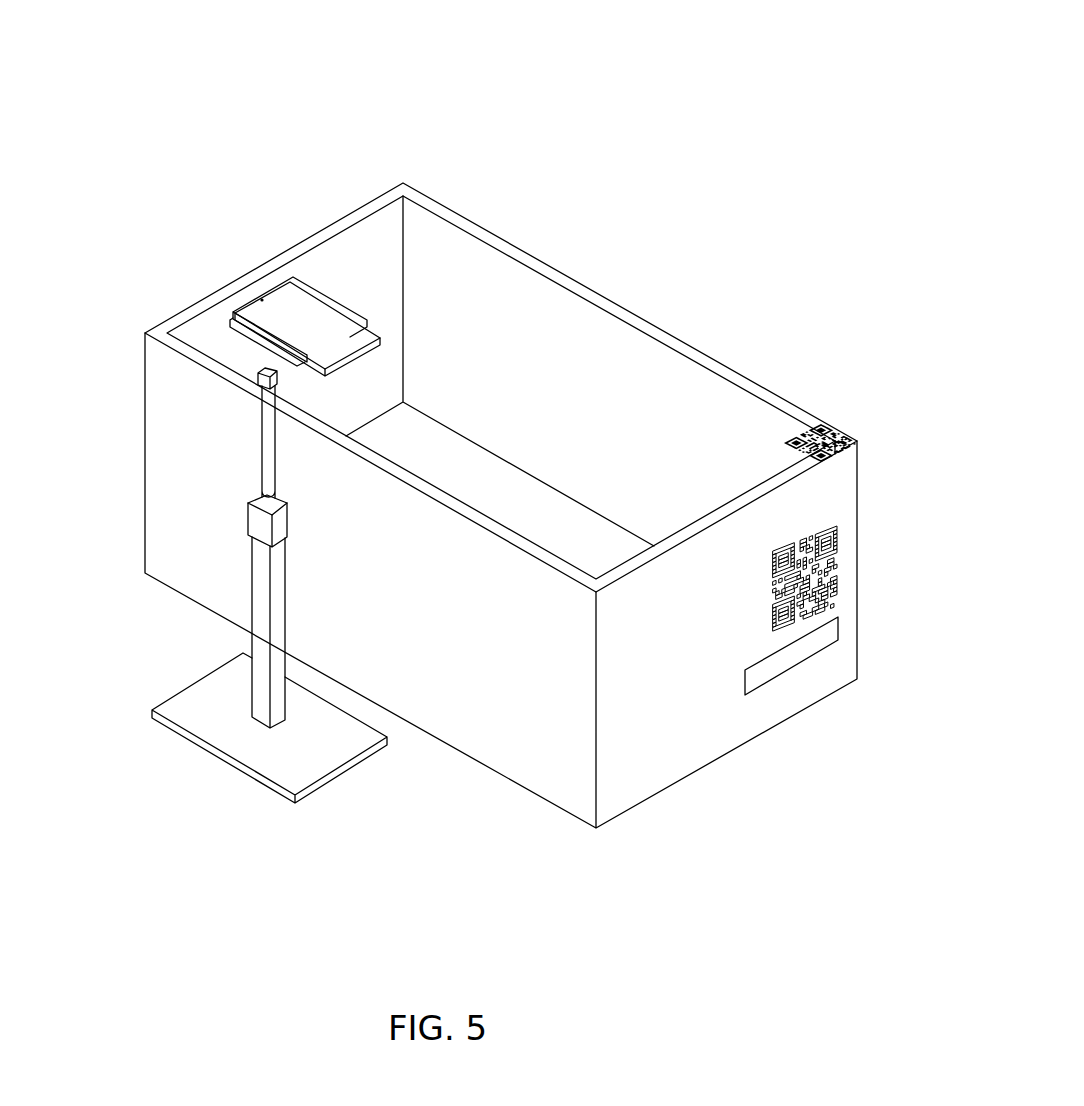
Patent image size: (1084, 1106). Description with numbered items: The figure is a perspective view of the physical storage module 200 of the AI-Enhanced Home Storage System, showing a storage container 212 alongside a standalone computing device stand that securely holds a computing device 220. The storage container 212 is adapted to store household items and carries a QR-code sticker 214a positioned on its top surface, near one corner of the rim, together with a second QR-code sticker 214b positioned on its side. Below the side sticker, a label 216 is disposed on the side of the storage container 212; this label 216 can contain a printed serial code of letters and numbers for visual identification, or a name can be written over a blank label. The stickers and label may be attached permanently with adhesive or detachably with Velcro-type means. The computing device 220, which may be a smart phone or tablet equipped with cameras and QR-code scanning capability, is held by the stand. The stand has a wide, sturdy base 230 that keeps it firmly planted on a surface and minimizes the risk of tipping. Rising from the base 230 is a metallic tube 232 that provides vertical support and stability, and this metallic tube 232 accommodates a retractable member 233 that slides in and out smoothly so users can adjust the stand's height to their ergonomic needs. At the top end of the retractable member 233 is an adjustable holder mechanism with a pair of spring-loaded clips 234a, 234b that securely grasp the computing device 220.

The physical storage module 200 is at (165, 47).
The storage container 212 is at (595, 290).
The QR-code sticker 214a is at (837, 428).
The QR-code sticker 214b is at (835, 555).
The label 216 is at (837, 627).
The computing device 220 is at (300, 312).
The base 230 is at (228, 736).
The metallic tube 232 is at (260, 607).
The retractable member 233 is at (265, 455).
The spring-loaded clip 234a is at (345, 312).
The spring-loaded clip 234b is at (232, 326).